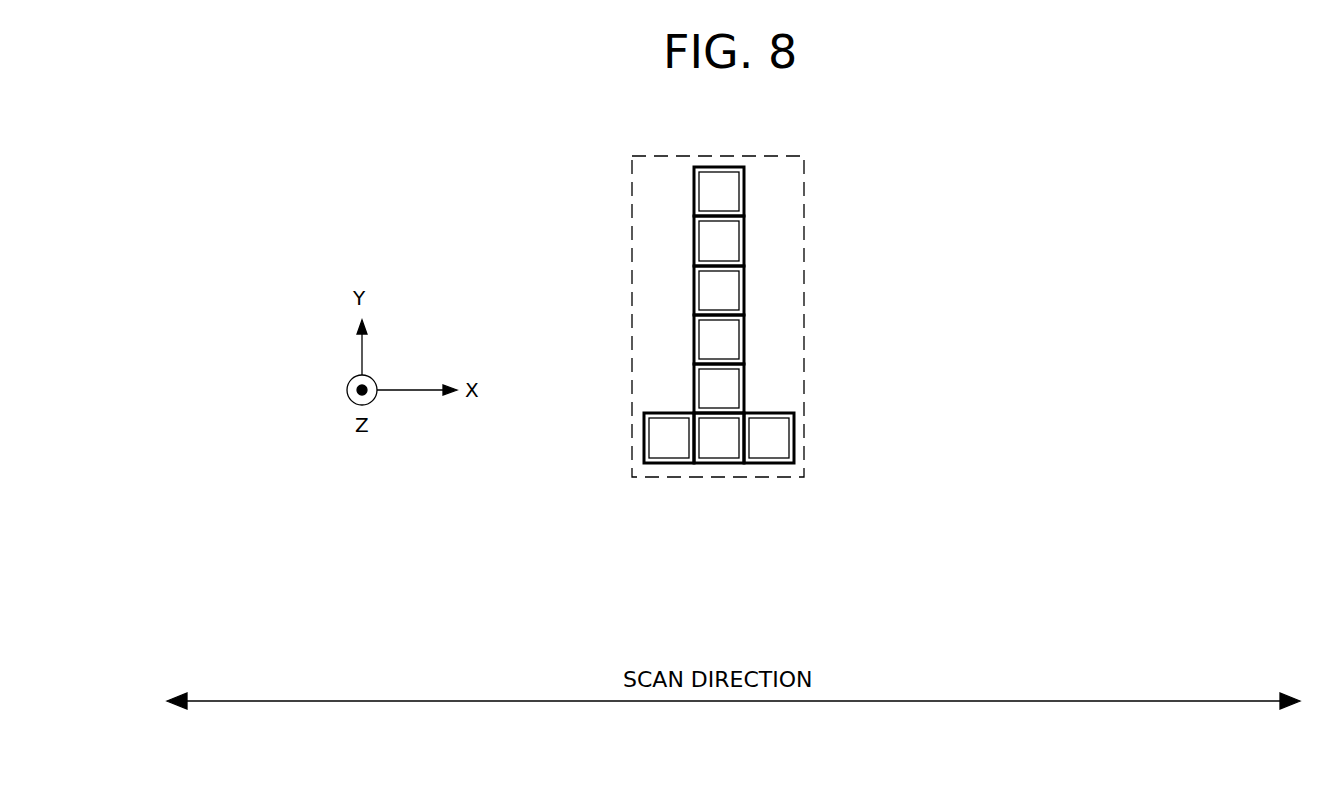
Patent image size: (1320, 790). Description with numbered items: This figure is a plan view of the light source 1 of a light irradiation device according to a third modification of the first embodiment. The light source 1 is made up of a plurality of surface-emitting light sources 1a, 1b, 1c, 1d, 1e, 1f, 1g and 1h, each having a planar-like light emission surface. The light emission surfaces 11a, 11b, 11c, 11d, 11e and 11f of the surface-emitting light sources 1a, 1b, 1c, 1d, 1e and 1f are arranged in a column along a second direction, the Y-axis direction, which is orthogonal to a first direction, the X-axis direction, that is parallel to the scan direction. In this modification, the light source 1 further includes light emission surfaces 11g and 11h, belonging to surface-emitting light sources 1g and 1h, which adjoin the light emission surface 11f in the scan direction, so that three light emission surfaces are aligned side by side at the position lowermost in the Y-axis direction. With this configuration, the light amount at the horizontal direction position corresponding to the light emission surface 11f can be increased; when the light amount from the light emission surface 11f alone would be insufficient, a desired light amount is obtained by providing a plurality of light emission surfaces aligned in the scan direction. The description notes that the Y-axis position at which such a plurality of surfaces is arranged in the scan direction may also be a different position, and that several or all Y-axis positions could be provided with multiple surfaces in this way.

The light source 1 is at (660, 155).
The surface-emitting light source 1a is at (744, 173).
The surface-emitting light source 1b is at (744, 222).
The surface-emitting light source 1c is at (744, 272).
The surface-emitting light source 1d is at (744, 321).
The surface-emitting light source 1e is at (744, 370).
The surface-emitting light source 1f is at (732, 463).
The surface-emitting light source 1g is at (651, 463).
The surface-emitting light source 1h is at (795, 463).
The light emission surface 11a is at (730, 203).
The light emission surface 11b is at (730, 252).
The light emission surface 11c is at (730, 302).
The light emission surface 11d is at (730, 351).
The light emission surface 11e is at (730, 400).
The light emission surface 11f is at (711, 442).
The light emission surface 11g is at (655, 442).
The light emission surface 11h is at (767, 442).